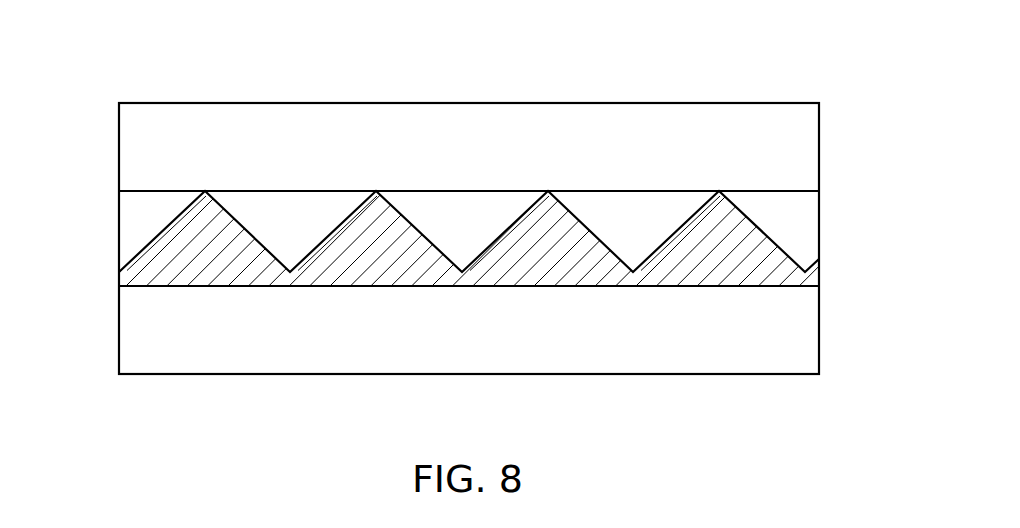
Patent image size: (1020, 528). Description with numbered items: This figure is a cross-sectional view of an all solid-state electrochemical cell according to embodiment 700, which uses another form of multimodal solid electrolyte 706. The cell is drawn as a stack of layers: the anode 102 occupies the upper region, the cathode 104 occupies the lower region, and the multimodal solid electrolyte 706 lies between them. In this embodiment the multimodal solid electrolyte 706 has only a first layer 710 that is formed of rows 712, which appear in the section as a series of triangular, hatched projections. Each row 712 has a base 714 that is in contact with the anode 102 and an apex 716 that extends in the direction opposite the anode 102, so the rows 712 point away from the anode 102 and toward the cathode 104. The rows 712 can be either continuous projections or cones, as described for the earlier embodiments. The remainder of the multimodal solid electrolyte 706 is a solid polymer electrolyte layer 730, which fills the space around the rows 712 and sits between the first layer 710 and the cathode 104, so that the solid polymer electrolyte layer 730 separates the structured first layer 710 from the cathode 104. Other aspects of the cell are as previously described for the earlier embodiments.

The embodiment 700 is at (101, 114).
The anode 102 is at (783, 142).
The cathode 104 is at (762, 352).
The multimodal solid electrolyte 706 is at (486, 182).
The first layer 710 is at (138, 213).
The rows 712 is at (268, 213).
The base 714 is at (453, 212).
The apex 716 is at (290, 268).
The solid polymer electrolyte layer 730 is at (758, 265).